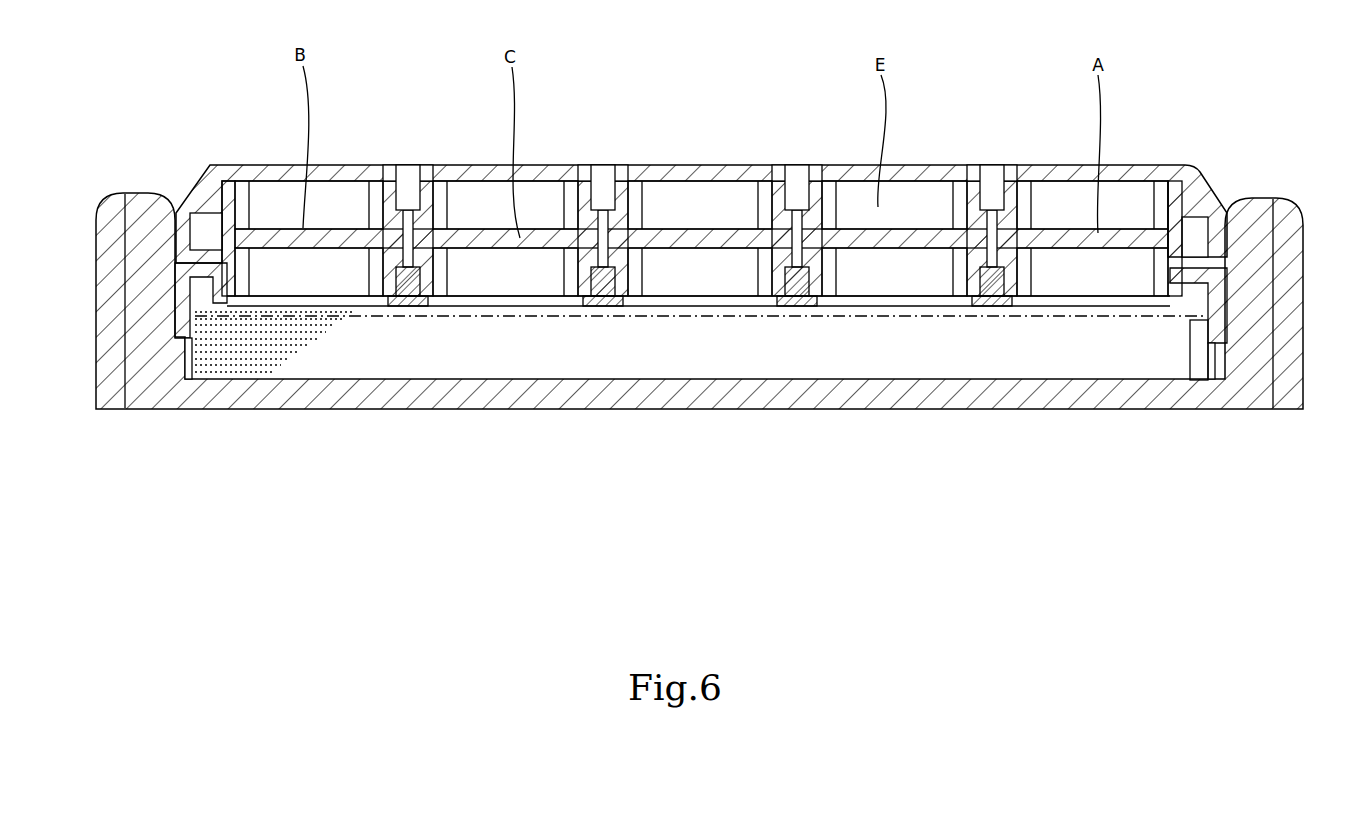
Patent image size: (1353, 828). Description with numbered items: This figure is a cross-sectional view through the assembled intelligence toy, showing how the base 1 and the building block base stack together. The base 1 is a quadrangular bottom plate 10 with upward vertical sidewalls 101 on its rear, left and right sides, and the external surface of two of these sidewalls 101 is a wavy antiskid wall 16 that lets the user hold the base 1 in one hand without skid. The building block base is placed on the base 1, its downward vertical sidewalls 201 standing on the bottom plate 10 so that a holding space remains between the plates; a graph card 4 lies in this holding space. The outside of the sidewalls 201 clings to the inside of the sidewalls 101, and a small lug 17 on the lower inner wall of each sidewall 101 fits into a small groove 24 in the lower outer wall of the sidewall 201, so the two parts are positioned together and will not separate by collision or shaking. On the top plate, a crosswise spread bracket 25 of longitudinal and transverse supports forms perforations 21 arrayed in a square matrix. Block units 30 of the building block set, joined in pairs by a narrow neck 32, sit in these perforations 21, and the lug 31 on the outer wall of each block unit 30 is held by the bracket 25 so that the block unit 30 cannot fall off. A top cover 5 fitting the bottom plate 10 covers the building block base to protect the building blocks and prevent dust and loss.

The base 1 is at (707, 432).
The graph card 4 is at (300, 328).
The top cover 5 is at (257, 165).
The bottom plate 10 is at (1037, 407).
The antiskid wall 16 is at (84, 378).
The small lug 17 is at (180, 358).
The perforation 21 is at (478, 306).
The small groove 24 is at (190, 303).
The bracket 25 is at (405, 306).
The block unit 30 is at (730, 193).
The lug 31 is at (193, 179).
The narrow neck 32 is at (796, 195).
The sidewall 101 is at (142, 300).
The sidewall 201 is at (212, 310).